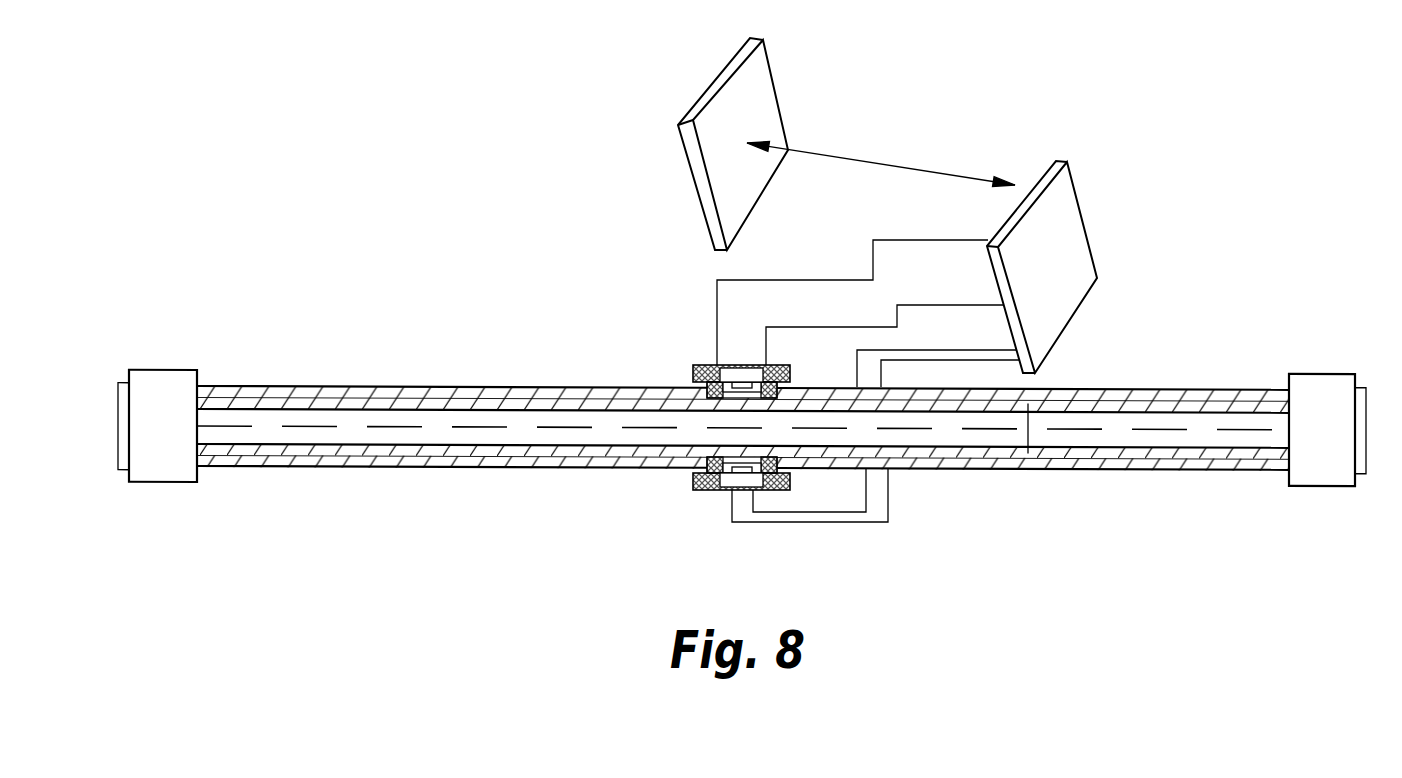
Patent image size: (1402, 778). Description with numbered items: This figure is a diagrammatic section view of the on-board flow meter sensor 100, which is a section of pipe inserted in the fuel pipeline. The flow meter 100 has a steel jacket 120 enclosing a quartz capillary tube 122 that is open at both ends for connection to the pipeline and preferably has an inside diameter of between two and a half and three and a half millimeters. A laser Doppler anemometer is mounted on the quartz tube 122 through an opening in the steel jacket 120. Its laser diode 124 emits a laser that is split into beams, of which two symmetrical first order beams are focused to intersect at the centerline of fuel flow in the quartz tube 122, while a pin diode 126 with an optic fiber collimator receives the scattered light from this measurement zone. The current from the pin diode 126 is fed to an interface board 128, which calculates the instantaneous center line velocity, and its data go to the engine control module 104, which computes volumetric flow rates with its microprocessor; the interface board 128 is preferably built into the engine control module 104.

The on-board flow meter sensor 100 is at (686, 312).
The engine control module 104 is at (712, 83).
The steel jacket 120 is at (385, 386).
The quartz capillary tube 122 is at (421, 466).
The laser diode 124 is at (700, 365).
The pin diode 126 is at (718, 490).
The interface board 128 is at (1077, 247).